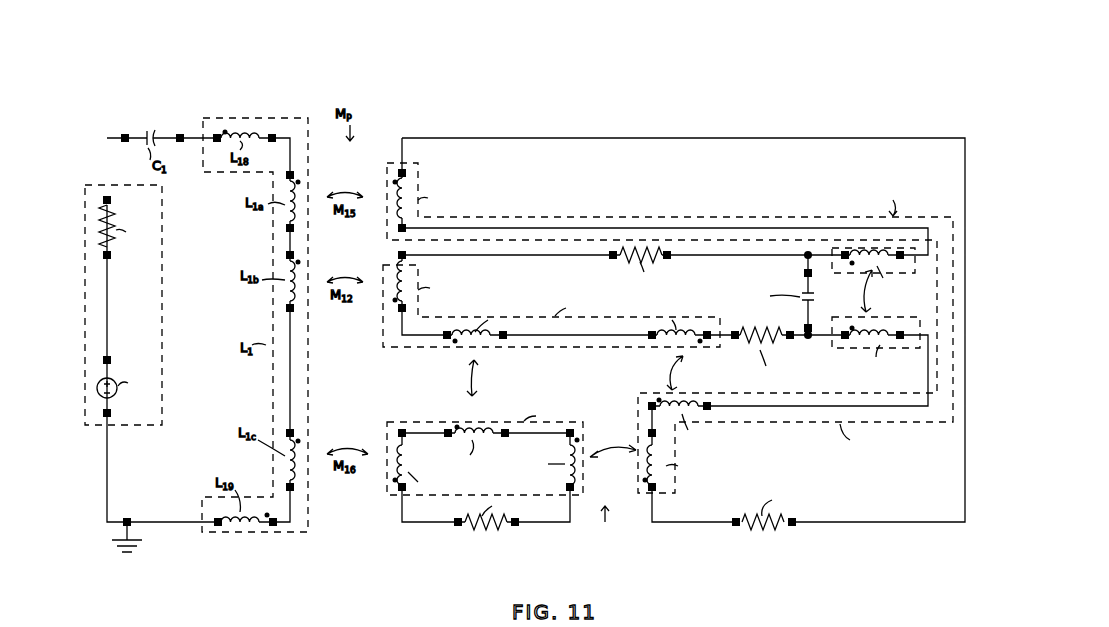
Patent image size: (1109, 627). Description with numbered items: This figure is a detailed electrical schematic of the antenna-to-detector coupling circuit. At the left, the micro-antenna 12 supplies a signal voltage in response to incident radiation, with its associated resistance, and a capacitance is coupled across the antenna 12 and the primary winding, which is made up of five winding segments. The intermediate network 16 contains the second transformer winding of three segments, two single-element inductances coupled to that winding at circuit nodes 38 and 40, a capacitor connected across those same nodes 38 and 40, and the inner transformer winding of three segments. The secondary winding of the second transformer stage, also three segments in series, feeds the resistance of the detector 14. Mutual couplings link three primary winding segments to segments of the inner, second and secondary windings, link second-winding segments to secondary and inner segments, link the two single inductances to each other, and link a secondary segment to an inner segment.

The micro-antenna 12 is at (163, 268).
The detector element 14 is at (512, 546).
The coupling network 16 is at (674, 319).
The circuit node 38 is at (808, 240).
The circuit node 40 is at (809, 346).